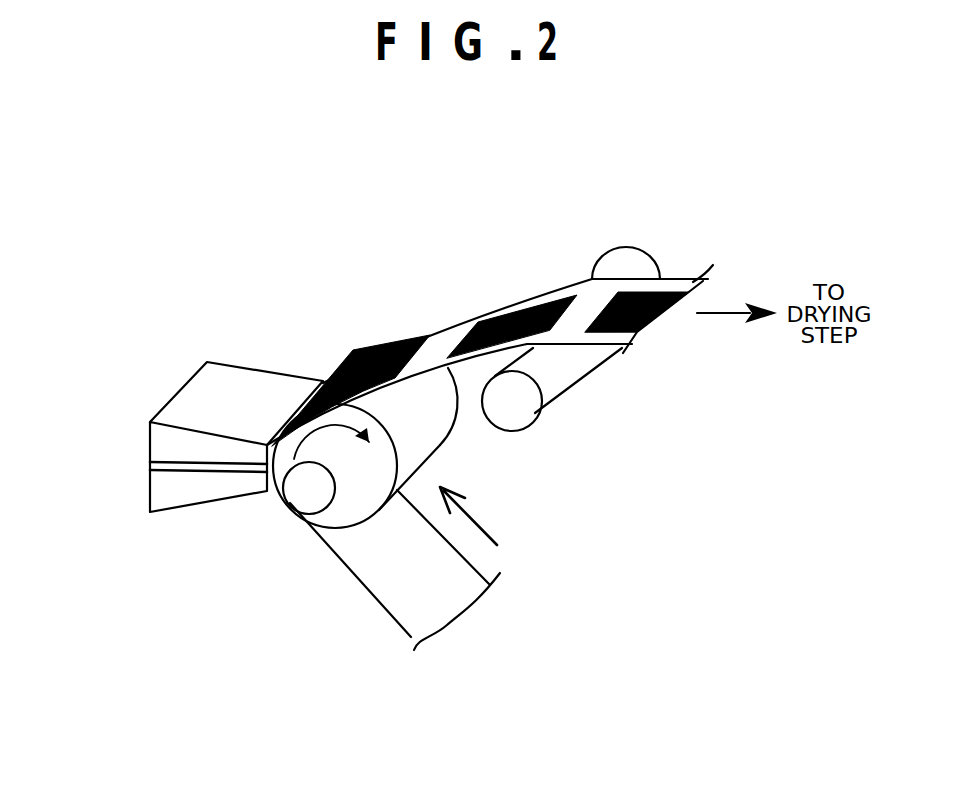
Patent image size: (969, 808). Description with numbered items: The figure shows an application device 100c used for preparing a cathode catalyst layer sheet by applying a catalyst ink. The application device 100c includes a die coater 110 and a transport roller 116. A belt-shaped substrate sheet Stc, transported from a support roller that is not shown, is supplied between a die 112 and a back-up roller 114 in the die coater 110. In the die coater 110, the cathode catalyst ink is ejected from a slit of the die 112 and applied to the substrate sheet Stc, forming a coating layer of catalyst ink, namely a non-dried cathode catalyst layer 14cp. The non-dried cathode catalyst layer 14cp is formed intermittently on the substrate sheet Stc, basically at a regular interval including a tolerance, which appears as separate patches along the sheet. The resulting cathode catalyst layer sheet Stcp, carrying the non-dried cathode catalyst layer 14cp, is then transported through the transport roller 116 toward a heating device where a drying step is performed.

The application device 100c is at (110, 278).
The die coater 110 is at (323, 600).
The die 112 is at (197, 491).
The back-up roller 114 is at (305, 493).
The transport roller 116 is at (558, 376).
The non-dried cathode catalyst layer 14cp is at (368, 350).
The substrate sheet Stc is at (399, 607).
The cathode catalyst layer sheet Stcp is at (690, 274).